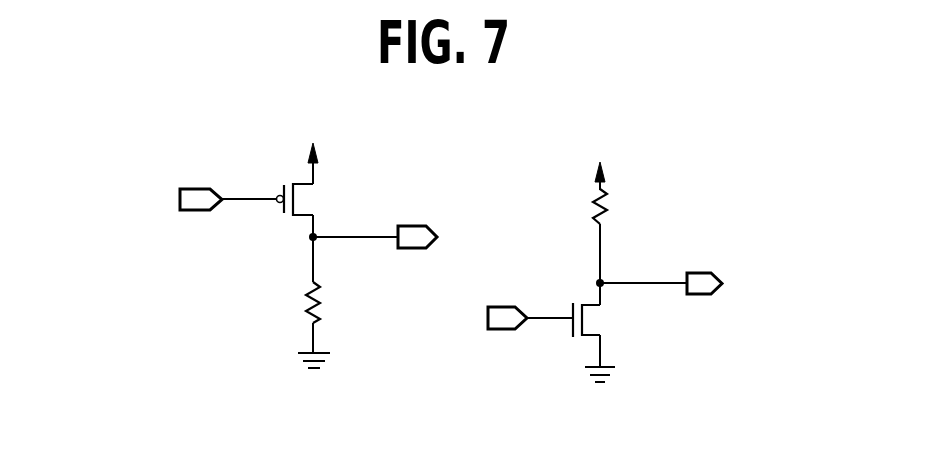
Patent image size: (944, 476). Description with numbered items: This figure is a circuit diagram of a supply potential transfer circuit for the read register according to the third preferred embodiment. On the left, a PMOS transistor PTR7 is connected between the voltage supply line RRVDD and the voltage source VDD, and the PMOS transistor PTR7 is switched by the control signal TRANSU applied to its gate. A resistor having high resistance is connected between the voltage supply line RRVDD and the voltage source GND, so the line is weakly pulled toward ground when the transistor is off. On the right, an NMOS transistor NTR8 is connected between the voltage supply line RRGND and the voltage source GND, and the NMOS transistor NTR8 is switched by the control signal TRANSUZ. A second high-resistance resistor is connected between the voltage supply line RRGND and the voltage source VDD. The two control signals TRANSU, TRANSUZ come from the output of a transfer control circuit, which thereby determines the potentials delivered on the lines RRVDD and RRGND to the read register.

The PMOS transistor PTR7 is at (335, 187).
The NMOS transistor NTR8 is at (637, 329).
The control signal TRANSU is at (166, 200).
The control signal TRANSUZ is at (462, 318).
The voltage supply line RRVDD is at (423, 236).
The voltage supply line RRGND is at (715, 285).
The voltage source VDD is at (456, 147).
The voltage source GND is at (490, 377).